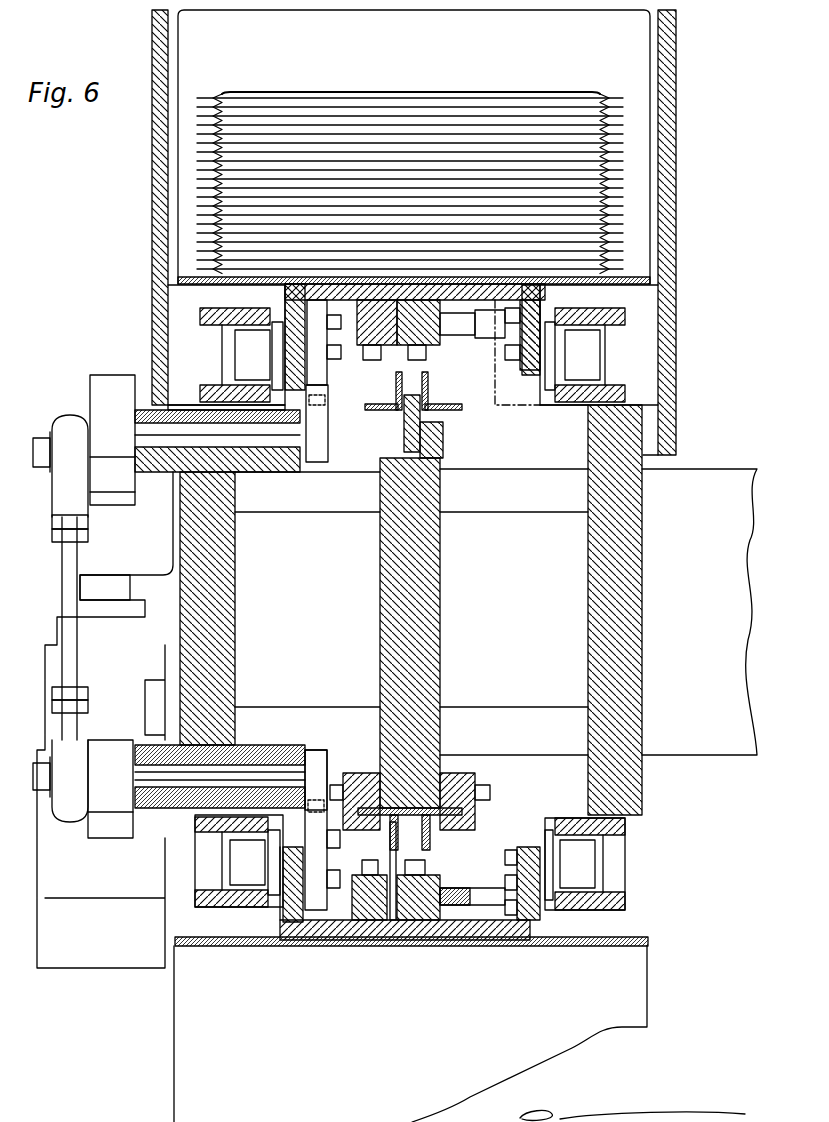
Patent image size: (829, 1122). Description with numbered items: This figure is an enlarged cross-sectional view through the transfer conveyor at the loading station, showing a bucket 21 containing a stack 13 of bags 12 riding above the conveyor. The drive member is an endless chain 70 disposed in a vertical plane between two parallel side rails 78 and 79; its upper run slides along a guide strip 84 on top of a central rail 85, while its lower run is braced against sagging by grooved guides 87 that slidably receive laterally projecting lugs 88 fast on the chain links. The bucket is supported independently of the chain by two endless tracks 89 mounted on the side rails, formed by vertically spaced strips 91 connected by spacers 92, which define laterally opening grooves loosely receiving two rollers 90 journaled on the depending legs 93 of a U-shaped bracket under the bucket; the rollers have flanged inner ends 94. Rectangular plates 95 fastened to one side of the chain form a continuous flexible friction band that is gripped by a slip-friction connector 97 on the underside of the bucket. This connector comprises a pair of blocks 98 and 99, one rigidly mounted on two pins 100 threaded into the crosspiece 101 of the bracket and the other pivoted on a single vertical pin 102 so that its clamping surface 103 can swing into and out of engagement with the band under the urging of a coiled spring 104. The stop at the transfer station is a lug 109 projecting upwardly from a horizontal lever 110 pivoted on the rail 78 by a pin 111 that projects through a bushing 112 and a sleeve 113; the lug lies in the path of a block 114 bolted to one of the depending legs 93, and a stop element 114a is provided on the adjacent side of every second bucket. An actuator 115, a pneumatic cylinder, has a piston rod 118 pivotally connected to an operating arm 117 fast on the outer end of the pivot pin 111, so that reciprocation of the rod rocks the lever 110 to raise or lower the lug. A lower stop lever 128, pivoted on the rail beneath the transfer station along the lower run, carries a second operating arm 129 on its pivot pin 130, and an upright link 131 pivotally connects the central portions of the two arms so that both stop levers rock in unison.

The bags 12 is at (370, 136).
The stacks 13 is at (515, 92).
The bucket 21 is at (640, 96).
The endless chain 70 is at (430, 378).
The side rail 78 is at (235, 618).
The side rail 79 is at (636, 612).
The guide strip 84 is at (404, 432).
The central rail 85 is at (440, 585).
The grooved guides 87 is at (350, 772).
The lugs 88 is at (455, 410).
The endless tracks 89 is at (188, 318).
The rollers 90 is at (238, 316).
The strips 91 is at (200, 332).
The spacers 92 is at (200, 356).
The depending legs 93 is at (298, 372).
The flanged inner ends 94 is at (272, 366).
The rectangular plates 95 is at (395, 378).
The slip-friction connector 97 is at (455, 337).
The block 98 is at (362, 330).
The block 99 is at (438, 352).
The pins 100 is at (366, 292).
The crosspiece 101 is at (486, 295).
The vertical pin 102 is at (448, 284).
The clamping surface 103 is at (392, 930).
The coiled spring 104 is at (448, 890).
The lug 109 is at (318, 402).
The lever 110 is at (326, 440).
The pin 111 is at (300, 445).
The bushing 112 is at (300, 470).
The sleeve 113 is at (295, 474).
The block 114 is at (330, 410).
The stop element 114a is at (505, 410).
The actuator 115 is at (48, 852).
The operating arm 117 is at (92, 396).
The piston rod 118 is at (138, 592).
The lever 128 is at (320, 762).
The second operating arm 129 is at (92, 836).
The pivot pin 130 is at (250, 760).
The upright link 131 is at (72, 590).